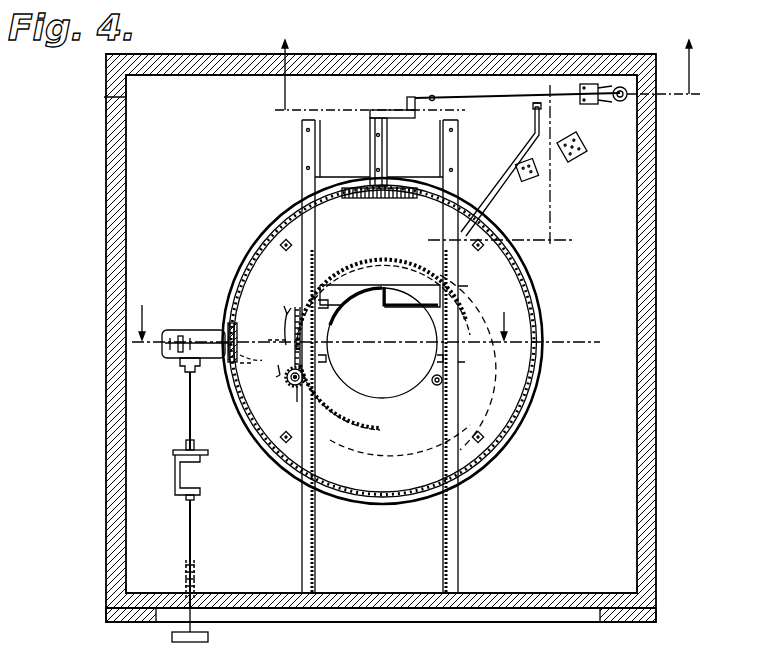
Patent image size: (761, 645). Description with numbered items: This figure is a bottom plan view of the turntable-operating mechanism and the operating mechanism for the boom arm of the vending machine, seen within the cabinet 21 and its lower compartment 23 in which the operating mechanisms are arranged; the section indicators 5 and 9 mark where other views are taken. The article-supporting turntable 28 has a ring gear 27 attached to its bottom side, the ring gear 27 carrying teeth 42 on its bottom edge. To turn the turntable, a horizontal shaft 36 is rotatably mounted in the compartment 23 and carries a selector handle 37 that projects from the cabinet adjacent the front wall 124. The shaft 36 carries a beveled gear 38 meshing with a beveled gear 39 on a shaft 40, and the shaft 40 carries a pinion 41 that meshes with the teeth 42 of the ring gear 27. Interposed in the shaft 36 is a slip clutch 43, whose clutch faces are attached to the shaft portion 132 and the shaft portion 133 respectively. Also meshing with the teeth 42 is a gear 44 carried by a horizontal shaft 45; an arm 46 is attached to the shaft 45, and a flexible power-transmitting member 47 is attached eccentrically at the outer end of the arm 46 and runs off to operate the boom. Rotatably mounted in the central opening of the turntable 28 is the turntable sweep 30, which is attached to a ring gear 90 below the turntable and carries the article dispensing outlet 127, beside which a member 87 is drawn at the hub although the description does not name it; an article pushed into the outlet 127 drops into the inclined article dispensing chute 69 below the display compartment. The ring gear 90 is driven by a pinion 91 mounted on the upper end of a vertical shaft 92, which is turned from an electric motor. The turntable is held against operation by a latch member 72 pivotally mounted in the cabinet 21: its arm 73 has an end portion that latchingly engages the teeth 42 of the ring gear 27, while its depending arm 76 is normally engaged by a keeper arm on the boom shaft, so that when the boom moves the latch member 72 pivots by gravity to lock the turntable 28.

The cabinet 21 is at (662, 368).
The compartment 23 is at (295, 600).
The ring gear 27 is at (518, 294).
The article-supporting turntable 28 is at (512, 362).
The turntable sweep 30 is at (484, 398).
The horizontal shaft 36 is at (194, 535).
The selector handle 37 is at (208, 638).
The beveled gear 38 is at (183, 364).
The beveled gear 39 is at (180, 335).
The shaft 40 is at (205, 340).
The pinion 41 is at (238, 332).
The teeth 42 is at (233, 305).
The slip clutch 43 is at (174, 476).
The gear 44 is at (408, 200).
The horizontal shaft 45 is at (387, 160).
The arm 46 is at (384, 110).
The flexible power-transmitting member 47 is at (526, 85).
The article dispensing chute 69 is at (440, 488).
The latch member 72 is at (500, 190).
The arm 73 is at (486, 205).
The depending arm 76 is at (532, 108).
The arm 87 is at (430, 294).
The ring gear 90 is at (358, 272).
The pinion 91 is at (298, 407).
The vertical shaft 92 is at (290, 386).
The front wall 124 is at (492, 608).
The article dispensing outlet 127 is at (382, 394).
The shaft portion 132 is at (188, 411).
The shaft portion 133 is at (196, 553).
The section line 5 is at (496, 63).
The section line 9 is at (366, 312).